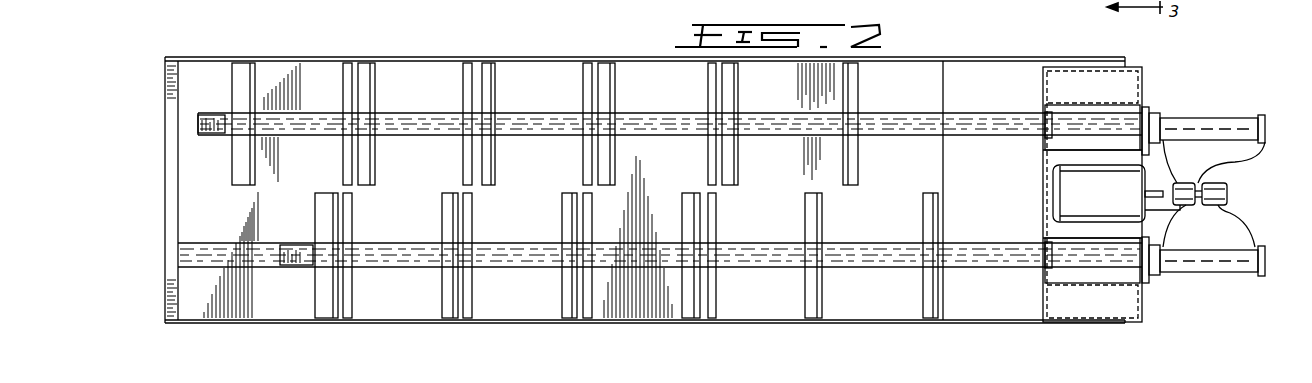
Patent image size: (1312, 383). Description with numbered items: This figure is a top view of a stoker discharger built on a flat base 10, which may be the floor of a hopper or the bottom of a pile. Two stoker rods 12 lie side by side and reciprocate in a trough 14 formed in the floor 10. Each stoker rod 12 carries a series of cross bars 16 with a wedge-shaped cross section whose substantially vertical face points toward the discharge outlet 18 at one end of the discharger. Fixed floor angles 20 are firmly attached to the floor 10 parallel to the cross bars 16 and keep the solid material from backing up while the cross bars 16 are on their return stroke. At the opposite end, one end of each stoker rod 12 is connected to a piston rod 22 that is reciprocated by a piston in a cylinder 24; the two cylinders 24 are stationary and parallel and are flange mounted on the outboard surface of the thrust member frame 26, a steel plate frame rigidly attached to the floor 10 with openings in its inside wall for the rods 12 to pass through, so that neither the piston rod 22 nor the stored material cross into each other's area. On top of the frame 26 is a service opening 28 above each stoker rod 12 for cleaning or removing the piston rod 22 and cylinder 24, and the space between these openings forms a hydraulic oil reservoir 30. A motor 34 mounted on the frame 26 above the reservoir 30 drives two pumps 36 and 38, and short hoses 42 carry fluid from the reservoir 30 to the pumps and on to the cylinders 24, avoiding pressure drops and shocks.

The flat base 10 is at (568, 70).
The stoker rod 12 is at (414, 122).
The trough 14 is at (305, 110).
The cross bar 16 is at (243, 68).
The discharge outlet 18 is at (967, 80).
The fixed floor angle 20 is at (470, 65).
The piston rod 22 is at (1115, 130).
The cylinder 24 is at (1230, 123).
The thrust member frame 26 is at (1095, 72).
The service opening 28 is at (1055, 113).
The hydraulic oil reservoir 30 is at (1045, 222).
The motor 34 is at (1063, 183).
The pump 36 is at (1190, 206).
The pump 38 is at (1222, 193).
The hose 42 is at (1217, 157).